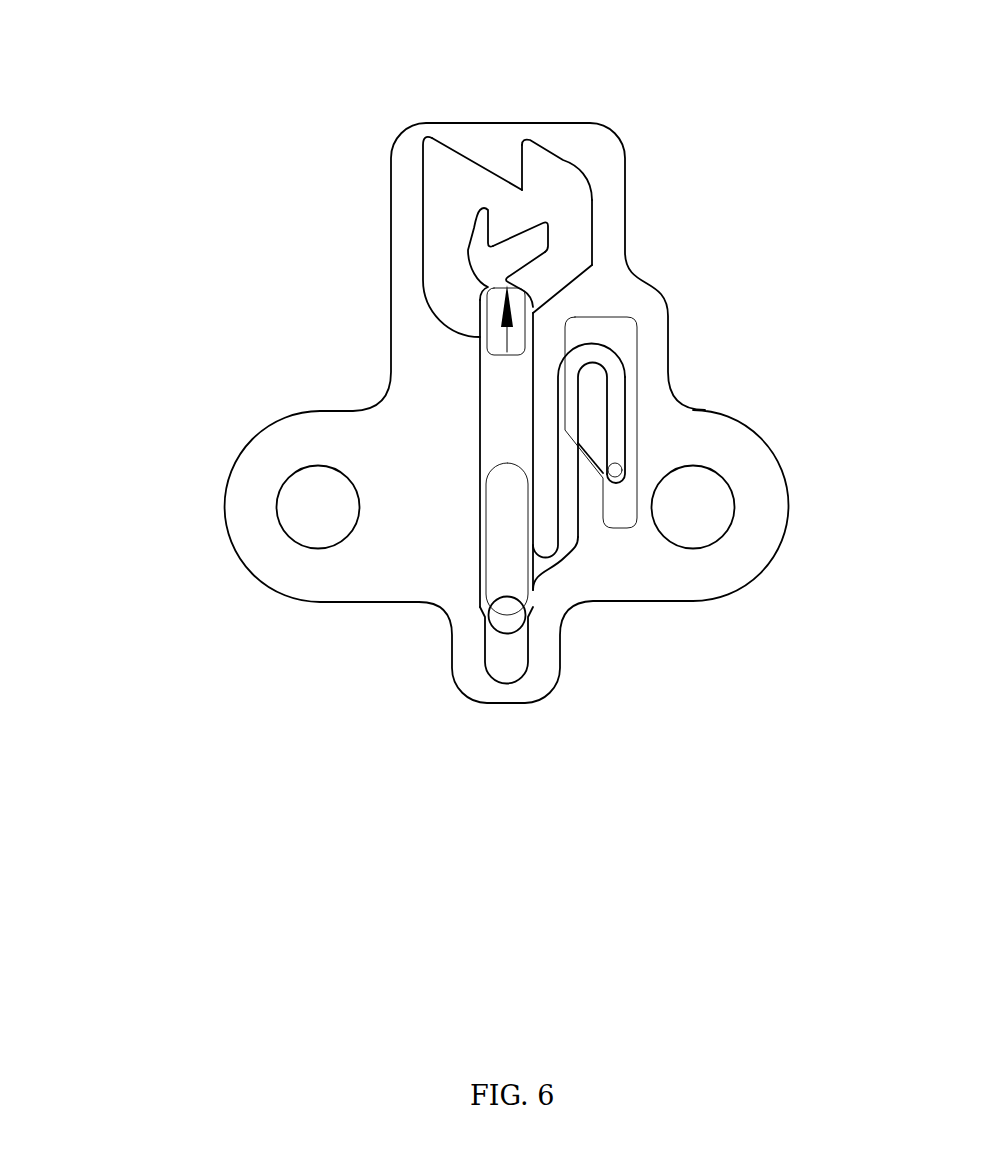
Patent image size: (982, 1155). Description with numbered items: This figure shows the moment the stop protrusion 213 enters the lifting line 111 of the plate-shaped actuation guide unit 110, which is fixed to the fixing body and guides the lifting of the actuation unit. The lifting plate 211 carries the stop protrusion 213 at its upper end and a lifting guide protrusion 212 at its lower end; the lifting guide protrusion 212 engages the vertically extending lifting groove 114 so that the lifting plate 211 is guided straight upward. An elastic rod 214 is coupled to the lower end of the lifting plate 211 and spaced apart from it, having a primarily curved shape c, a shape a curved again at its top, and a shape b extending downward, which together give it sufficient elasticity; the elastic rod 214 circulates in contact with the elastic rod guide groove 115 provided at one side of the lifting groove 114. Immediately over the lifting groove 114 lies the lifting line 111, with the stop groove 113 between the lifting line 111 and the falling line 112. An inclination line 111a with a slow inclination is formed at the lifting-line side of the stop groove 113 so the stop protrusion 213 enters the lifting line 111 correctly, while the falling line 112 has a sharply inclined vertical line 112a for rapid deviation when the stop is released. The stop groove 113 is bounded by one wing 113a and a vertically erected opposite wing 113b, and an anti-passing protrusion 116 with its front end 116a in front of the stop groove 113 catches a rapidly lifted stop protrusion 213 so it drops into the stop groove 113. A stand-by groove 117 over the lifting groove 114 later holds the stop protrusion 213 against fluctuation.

The actuation guide unit 110 is at (207, 598).
The lifting line 111 is at (543, 278).
The inclination line 111a is at (540, 265).
The falling line 112 is at (437, 243).
The vertical line 112a is at (470, 233).
The stop groove 113 is at (497, 227).
The one wing 113a is at (532, 210).
The opposite wing 113b is at (472, 210).
The lifting groove 114 is at (523, 655).
The elastic rod guide groove 115 is at (632, 376).
The anti-passing protrusion 116 is at (508, 167).
The front end 116a is at (567, 158).
The stand-by groove 117 is at (502, 355).
The lifting plate 211 is at (490, 393).
The lifting guide protrusion 212 is at (502, 623).
The stop protrusion 213 is at (497, 292).
The elastic rod 214 is at (580, 523).
The shape curved again at the top a is at (597, 340).
The shape of extending downward b is at (620, 460).
The primarily curved shape c is at (562, 568).